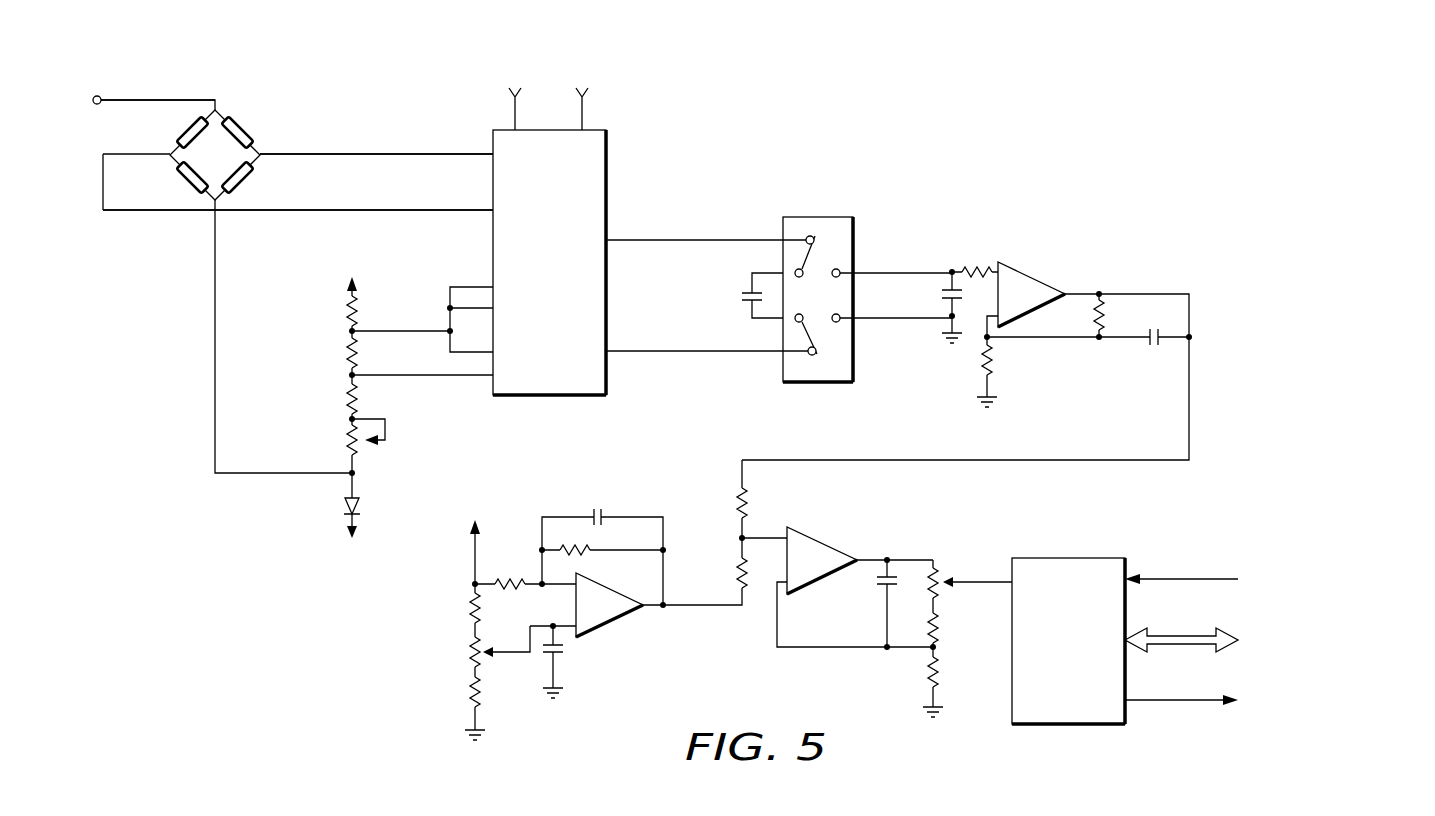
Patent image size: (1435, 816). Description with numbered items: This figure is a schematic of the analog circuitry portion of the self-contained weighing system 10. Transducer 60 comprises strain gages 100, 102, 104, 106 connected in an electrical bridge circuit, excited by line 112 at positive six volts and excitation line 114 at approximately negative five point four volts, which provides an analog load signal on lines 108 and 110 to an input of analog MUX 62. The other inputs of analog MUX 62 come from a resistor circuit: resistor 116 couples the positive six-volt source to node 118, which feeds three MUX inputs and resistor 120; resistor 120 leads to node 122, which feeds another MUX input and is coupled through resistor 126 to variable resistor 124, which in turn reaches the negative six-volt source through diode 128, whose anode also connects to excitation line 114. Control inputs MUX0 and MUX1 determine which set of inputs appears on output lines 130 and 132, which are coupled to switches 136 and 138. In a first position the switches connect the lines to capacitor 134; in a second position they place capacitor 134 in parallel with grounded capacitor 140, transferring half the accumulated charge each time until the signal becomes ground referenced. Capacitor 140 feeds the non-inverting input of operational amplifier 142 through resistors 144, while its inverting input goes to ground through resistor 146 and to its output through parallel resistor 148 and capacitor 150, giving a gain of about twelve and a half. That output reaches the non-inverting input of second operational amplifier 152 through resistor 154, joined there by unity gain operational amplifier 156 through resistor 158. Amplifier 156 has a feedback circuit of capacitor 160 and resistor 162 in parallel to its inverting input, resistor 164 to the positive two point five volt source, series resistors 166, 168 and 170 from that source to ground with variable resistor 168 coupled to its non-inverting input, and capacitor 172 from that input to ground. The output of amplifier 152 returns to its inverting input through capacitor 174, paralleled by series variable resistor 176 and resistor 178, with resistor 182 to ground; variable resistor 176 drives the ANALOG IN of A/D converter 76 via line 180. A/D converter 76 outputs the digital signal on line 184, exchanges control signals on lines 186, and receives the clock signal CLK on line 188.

The self-contained weighing system 10 is at (350, 56).
The transducer 60 is at (298, 201).
The analog MUX 62 is at (566, 311).
The A/D converter 76 is at (1033, 727).
The strain gage 100 is at (183, 137).
The strain gage 102 is at (243, 130).
The strain gage 104 is at (183, 180).
The strain gage 106 is at (247, 183).
The line 108 is at (350, 153).
The line 110 is at (370, 210).
The line 112 is at (167, 98).
The excitation line 114 is at (217, 253).
The resistor 116 is at (347, 310).
The node 118 is at (357, 328).
The resistor 120 is at (347, 357).
The node 122 is at (357, 377).
The variable resistor 124 is at (347, 440).
The resistor 126 is at (347, 400).
The diode 128 is at (347, 502).
The output line 130 is at (647, 240).
The output line 132 is at (647, 350).
The capacitor 134 is at (743, 290).
The switch 136 is at (818, 237).
The switch 138 is at (810, 352).
The capacitor 140 is at (940, 292).
The operational amplifier 142 is at (1040, 280).
The resistor 144 is at (973, 267).
The resistor 146 is at (990, 373).
The resistor 148 is at (1097, 320).
The capacitor 150 is at (1148, 347).
The second operational amplifier 152 is at (830, 545).
The resistor 154 is at (745, 503).
The operational amplifier 156 is at (620, 620).
The resistor 158 is at (738, 570).
The capacitor 160 is at (602, 507).
The resistor 162 is at (570, 542).
The resistor 164 is at (505, 577).
The resistor 166 is at (470, 598).
The variable resistor 168 is at (470, 652).
The resistor 170 is at (472, 707).
The capacitor 172 is at (567, 650).
The capacitor 174 is at (877, 583).
The variable resistor 176 is at (937, 587).
The resistor 178 is at (937, 640).
The line 180 is at (980, 578).
The resistor 182 is at (937, 678).
The line 184 is at (1150, 698).
The lines 186 is at (1180, 632).
The line 188 is at (1152, 578).